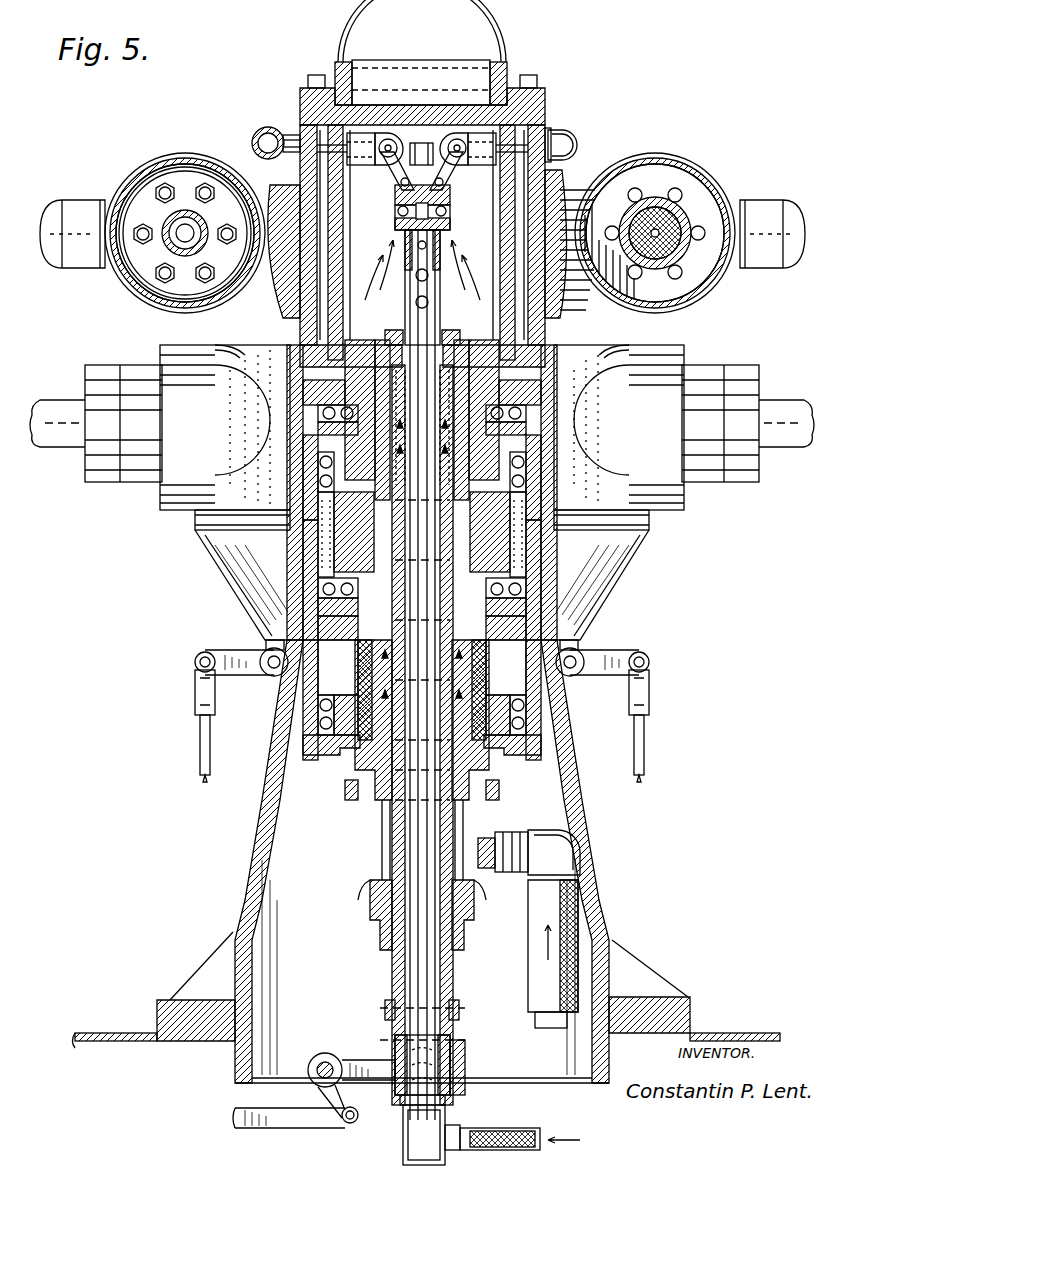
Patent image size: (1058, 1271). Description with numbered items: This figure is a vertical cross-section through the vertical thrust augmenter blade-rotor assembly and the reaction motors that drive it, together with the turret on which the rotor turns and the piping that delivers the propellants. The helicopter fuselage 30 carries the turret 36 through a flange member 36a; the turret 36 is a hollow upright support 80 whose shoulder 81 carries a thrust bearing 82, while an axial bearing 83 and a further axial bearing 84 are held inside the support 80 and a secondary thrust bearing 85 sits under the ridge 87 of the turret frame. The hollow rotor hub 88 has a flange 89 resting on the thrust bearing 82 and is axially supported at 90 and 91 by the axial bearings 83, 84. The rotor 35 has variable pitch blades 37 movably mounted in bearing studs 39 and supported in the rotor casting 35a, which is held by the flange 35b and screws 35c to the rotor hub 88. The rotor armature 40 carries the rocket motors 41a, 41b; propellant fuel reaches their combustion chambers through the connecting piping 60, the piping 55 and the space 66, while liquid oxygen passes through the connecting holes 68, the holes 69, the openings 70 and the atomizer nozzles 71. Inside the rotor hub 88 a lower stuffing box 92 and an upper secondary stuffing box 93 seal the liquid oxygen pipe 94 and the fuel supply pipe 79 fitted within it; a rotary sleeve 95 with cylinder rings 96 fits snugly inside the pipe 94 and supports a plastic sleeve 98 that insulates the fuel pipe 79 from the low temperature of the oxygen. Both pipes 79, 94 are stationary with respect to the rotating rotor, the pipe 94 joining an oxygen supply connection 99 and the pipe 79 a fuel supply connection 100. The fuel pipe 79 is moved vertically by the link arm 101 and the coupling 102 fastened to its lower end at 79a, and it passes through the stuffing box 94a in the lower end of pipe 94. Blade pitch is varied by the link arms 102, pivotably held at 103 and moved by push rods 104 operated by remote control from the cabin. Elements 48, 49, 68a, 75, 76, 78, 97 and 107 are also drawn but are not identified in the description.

The fuselage 30 is at (115, 1024).
The rotor 35 is at (421, 477).
The rotor casting 35a is at (198, 348).
The flange 35b is at (292, 390).
The screws 35c is at (578, 322).
The turret 36 is at (407, 714).
The flange member 36a is at (170, 1000).
The variable pitch blades 37 is at (62, 447).
The bearing studs 39 is at (132, 481).
The rotor armature 40 is at (548, 120).
The rocket motor 41a is at (170, 223).
The rocket motor 41b is at (656, 215).
The wheel rim 48 is at (195, 158).
The wheel hub 49 is at (165, 225).
The piping 55 is at (292, 153).
The connecting piping 60 is at (268, 127).
The space 66 is at (150, 300).
The connecting holes 68 is at (330, 275).
The passage 68a is at (592, 322).
The holes 69 is at (282, 305).
The openings 70 is at (700, 230).
The atomizer nozzles 71 is at (160, 270).
The pivot 75 is at (386, 160).
The link 76 is at (445, 188).
The bearing block 78 is at (397, 197).
The fuel supply pipe 79 is at (442, 243).
The lower end of fuel supply pipe 79a is at (395, 1112).
The hollow upright support 80 is at (303, 700).
The shoulder 81 is at (318, 440).
The thrust bearing 82 is at (318, 413).
The axial bearing 83 is at (320, 478).
The axial bearing 84 is at (318, 725).
The secondary thrust bearing 85 is at (318, 589).
The ridge 87 is at (303, 553).
The rotor hub 88 is at (356, 683).
The flange 89 is at (303, 392).
The axial support point 90 is at (318, 460).
The axial support point 91 is at (357, 768).
The stuffing box 92 is at (348, 795).
The secondary stuffing box 93 is at (465, 330).
The liquid oxygen pipe 94 is at (380, 828).
The stuffing box 94a is at (372, 1000).
The rotary sleeve 95 is at (385, 332).
The cylinder rings 96 is at (545, 440).
The inner tube 97 is at (470, 850).
The plastic elongated sleeve 98 is at (407, 866).
The oxygen supply connection 99 is at (532, 895).
The fuel supply connection 100 is at (490, 1130).
The link arm 101 is at (345, 1033).
The coupling 102 is at (228, 638).
The pivot 103 is at (266, 674).
The push rods 104 is at (200, 720).
The cylinder 107 is at (58, 200).